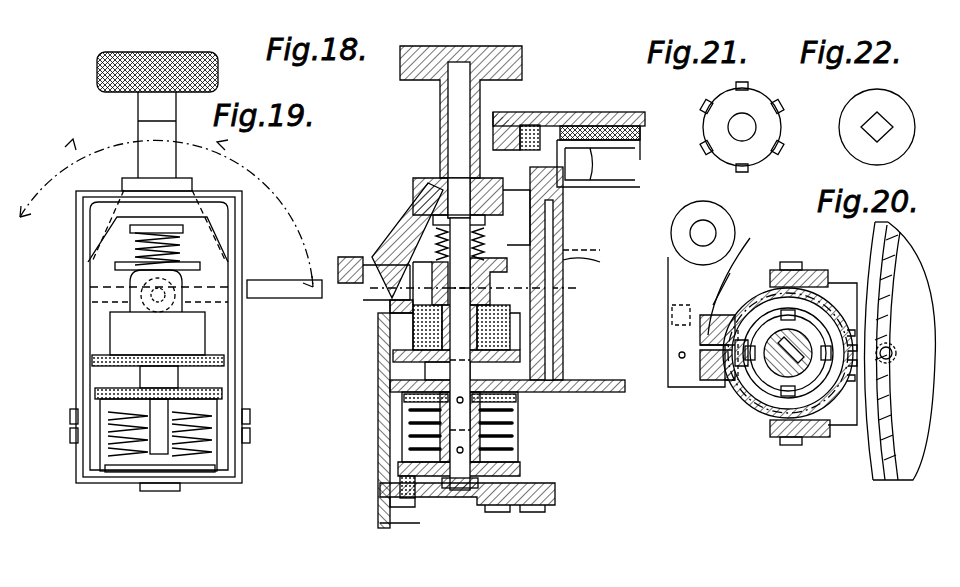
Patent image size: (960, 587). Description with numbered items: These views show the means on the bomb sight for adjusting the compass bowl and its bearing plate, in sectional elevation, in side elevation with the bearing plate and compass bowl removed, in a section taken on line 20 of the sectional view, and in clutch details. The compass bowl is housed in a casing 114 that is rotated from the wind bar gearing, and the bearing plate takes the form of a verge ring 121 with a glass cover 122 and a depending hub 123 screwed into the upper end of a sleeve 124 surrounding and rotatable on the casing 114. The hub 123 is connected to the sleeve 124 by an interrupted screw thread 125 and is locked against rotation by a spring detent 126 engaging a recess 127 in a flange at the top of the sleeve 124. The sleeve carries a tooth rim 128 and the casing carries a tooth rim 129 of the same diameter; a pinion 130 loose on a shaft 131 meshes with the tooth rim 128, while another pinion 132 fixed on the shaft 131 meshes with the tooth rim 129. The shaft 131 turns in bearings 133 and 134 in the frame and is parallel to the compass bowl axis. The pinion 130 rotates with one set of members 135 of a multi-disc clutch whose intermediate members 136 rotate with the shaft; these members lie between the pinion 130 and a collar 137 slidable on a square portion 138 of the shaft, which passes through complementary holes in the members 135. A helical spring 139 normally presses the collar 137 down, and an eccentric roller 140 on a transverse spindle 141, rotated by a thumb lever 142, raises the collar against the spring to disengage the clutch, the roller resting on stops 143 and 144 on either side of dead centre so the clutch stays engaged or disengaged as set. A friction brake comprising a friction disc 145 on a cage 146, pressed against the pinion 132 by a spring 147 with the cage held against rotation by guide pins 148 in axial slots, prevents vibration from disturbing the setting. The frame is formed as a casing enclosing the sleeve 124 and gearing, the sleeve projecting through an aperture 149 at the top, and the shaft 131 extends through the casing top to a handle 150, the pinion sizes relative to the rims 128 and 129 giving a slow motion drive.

In FIG. 18, the section line 20 is at (333, 284).
In FIG. 18, the casing 114 is at (565, 250).
In FIG. 18, the verge ring 121 is at (580, 118).
In FIG. 18, the glass cover 122 is at (548, 115).
In FIG. 18, the depending hub 123 is at (556, 190).
In FIG. 18, the sleeve 124 is at (606, 262).
In FIG. 18, the interrupted screw thread 125 is at (580, 170).
In FIG. 18, the spring detent 126 is at (520, 128).
In FIG. 18, the recess 127 is at (640, 140).
In FIG. 18, the tooth rim 128 is at (520, 340).
In FIG. 20, the tooth rim 128 is at (880, 440).
In FIG. 18, the tooth rim 129 is at (540, 384).
In FIG. 19, the pinion 130 is at (92, 360).
In FIG. 18, the pinion 130 is at (415, 392).
In FIG. 20, the pinion 130 is at (830, 385).
In FIG. 18, the shaft 131 is at (415, 400).
In FIG. 19, the pinion 132 is at (95, 393).
In FIG. 18, the pinion 132 is at (440, 420).
In FIG. 18, the bearing 133 is at (440, 185).
In FIG. 18, the bearing 134 is at (458, 482).
In FIG. 18, the clutch members 135 is at (450, 300).
In FIG. 21, the clutch members 135 is at (755, 158).
In FIG. 20, the clutch members 135 is at (815, 310).
In FIG. 18, the intermediate clutch members 136 is at (515, 325).
In FIG. 22, the intermediate clutch members 136 is at (850, 107).
In FIG. 20, the intermediate clutch members 136 is at (880, 355).
In FIG. 19, the collar 137 is at (135, 262).
In FIG. 18, the collar 137 is at (430, 262).
In FIG. 20, the collar 137 is at (782, 340).
In FIG. 18, the square portion 138 is at (440, 275).
In FIG. 20, the square portion 138 is at (778, 375).
In FIG. 19, the helical spring 139 is at (128, 290).
In FIG. 18, the helical spring 139 is at (430, 212).
In FIG. 18, the eccentric roller 140 is at (440, 290).
In FIG. 20, the eccentric roller 140 is at (740, 366).
In FIG. 19, the transverse spindle 141 is at (92, 305).
In FIG. 18, the transverse spindle 141 is at (405, 305).
In FIG. 20, the transverse spindle 141 is at (705, 345).
In FIG. 19, the thumb lever 142 is at (268, 282).
In FIG. 18, the thumb lever 142 is at (352, 258).
In FIG. 20, the thumb lever 142 is at (672, 262).
In FIG. 19, the stop 143 is at (110, 322).
In FIG. 20, the stop 143 is at (705, 370).
In FIG. 19, the stop 144 is at (205, 308).
In FIG. 20, the stop 144 is at (751, 273).
In FIG. 18, the friction disc 145 is at (420, 468).
In FIG. 19, the cage 146 is at (160, 462).
In FIG. 18, the cage 146 is at (520, 432).
In FIG. 19, the spring 147 is at (212, 460).
In FIG. 18, the spring 147 is at (515, 450).
In FIG. 19, the guide pins 148 is at (100, 430).
In FIG. 20, the guide pins 148 is at (805, 270).
In FIG. 18, the aperture 149 is at (549, 205).
In FIG. 19, the handle 150 is at (100, 60).
In FIG. 18, the handle 150 is at (430, 72).